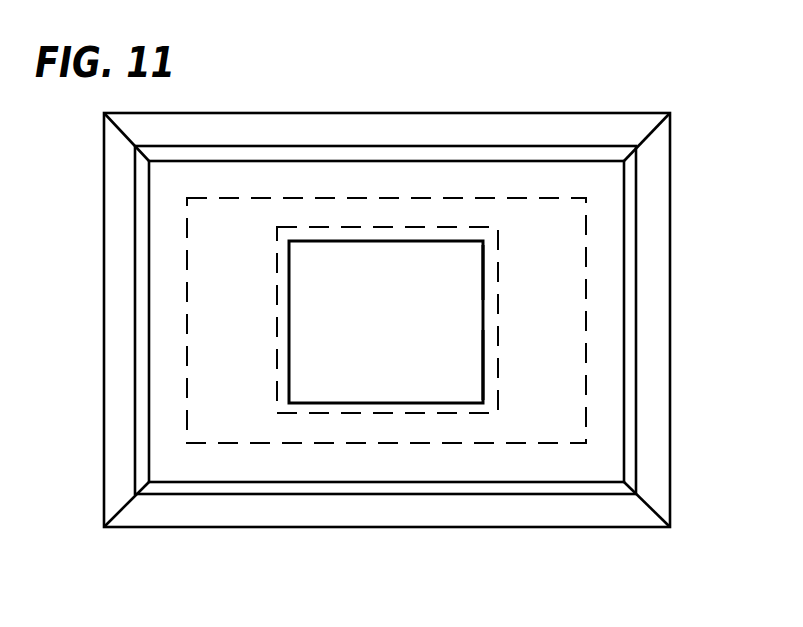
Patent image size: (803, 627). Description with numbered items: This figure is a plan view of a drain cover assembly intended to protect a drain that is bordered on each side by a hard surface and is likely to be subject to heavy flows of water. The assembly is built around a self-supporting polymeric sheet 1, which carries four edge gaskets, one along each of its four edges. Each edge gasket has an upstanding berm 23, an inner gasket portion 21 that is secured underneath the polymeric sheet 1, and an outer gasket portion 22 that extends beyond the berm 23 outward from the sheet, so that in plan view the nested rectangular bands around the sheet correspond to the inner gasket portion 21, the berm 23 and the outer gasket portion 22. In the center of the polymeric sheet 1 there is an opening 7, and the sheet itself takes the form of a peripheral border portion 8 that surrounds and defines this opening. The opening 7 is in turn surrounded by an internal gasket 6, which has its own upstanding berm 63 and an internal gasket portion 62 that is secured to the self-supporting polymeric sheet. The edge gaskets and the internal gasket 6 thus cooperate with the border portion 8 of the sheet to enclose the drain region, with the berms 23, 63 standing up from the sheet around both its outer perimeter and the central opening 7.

The polymeric sheet 1 is at (541, 181).
The outer gasket portion 22 is at (653, 232).
The upstanding berm 23 is at (632, 300).
The inner gasket portion 21 is at (608, 368).
The peripheral border portion 8 is at (235, 372).
The inner gasket portion 62 is at (451, 407).
The opening 7 is at (336, 332).
The internal gasket 6 is at (466, 268).
The upstanding berm 63 is at (483, 355).